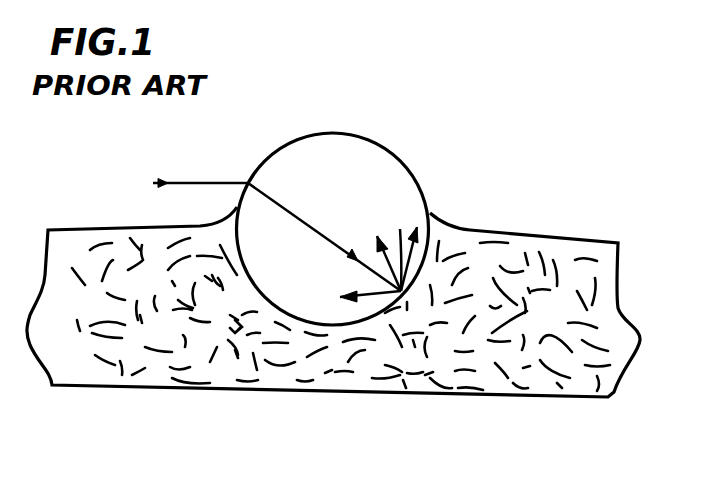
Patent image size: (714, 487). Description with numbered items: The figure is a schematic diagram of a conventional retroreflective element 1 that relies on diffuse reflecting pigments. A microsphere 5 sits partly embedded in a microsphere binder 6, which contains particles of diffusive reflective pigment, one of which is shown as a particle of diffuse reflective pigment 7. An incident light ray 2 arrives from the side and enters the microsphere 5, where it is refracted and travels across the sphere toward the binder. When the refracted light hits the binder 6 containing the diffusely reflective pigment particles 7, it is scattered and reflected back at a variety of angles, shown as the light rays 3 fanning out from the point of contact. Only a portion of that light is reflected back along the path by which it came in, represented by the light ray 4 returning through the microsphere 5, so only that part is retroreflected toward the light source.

The retroreflective element 1 is at (438, 175).
The incident light ray 2 is at (197, 177).
The light rays reflected at various angles 3 is at (401, 291).
The light ray reflected back in the direction of the source 4 is at (353, 250).
The microsphere 5 is at (381, 143).
The microsphere binder 6 is at (498, 380).
The particle of diffuse reflective pigment 7 is at (550, 370).